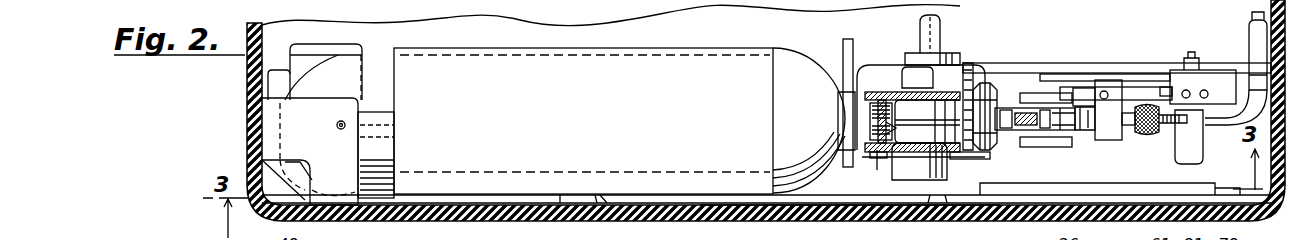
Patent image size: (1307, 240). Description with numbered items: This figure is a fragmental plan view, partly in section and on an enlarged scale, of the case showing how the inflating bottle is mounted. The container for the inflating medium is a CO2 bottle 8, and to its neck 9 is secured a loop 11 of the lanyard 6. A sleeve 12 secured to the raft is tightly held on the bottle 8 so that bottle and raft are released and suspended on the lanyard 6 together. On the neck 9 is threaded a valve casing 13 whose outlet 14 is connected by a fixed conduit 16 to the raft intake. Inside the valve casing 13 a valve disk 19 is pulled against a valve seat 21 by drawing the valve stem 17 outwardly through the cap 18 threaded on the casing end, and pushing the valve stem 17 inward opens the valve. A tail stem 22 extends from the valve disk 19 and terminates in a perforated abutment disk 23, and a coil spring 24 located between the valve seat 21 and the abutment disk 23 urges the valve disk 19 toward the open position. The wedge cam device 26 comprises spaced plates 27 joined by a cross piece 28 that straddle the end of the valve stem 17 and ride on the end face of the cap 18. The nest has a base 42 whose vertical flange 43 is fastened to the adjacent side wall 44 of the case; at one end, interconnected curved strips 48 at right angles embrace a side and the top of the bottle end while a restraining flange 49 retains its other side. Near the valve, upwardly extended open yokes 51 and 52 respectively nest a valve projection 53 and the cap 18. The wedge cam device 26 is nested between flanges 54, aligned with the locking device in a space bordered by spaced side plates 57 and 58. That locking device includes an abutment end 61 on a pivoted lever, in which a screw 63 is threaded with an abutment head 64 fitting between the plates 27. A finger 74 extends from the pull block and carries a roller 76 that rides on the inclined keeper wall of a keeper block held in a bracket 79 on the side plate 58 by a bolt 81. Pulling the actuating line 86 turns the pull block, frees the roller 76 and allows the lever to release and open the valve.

The lanyard 6 is at (856, 48).
The CO2 bottle 8 is at (785, 56).
The neck 9 is at (822, 108).
The loop 11 is at (840, 96).
The sleeve 12 is at (602, 108).
The valve casing 13 is at (940, 108).
The outlet 14 is at (917, 77).
The fixed conduit 16 is at (942, 22).
The valve stem 17 is at (944, 121).
The cap 18 is at (985, 150).
The valve disk 19 is at (905, 120).
The valve seat 21 is at (927, 131).
The tail stem 22 is at (872, 100).
The perforated abutment disk 23 is at (893, 128).
The coil spring 24 is at (877, 150).
The wedge cam device 26 is at (1055, 98).
The spaced plates 27 is at (1025, 130).
The cross piece 28 is at (1068, 128).
The base 42 is at (868, 180).
The vertical flange 43 is at (622, 197).
The side wall 44 is at (806, 206).
The curved strips 48 is at (272, 127).
The restraining flange 49 is at (336, 48).
The open yoke 51 is at (963, 159).
The open yoke 52 is at (975, 72).
The valve projection 53 is at (919, 169).
The flanges 54 is at (1050, 93).
The side plate 57 is at (1120, 185).
The side plate 58 is at (1150, 65).
The abutment end 61 is at (1110, 135).
The screw 63 is at (1142, 120).
The abutment head 64 is at (1078, 105).
The finger 74 is at (1144, 94).
The roller 76 is at (1176, 92).
The bracket 79 is at (1216, 85).
The bolt 81 is at (1236, 68).
The actuating line 86 is at (1176, 118).